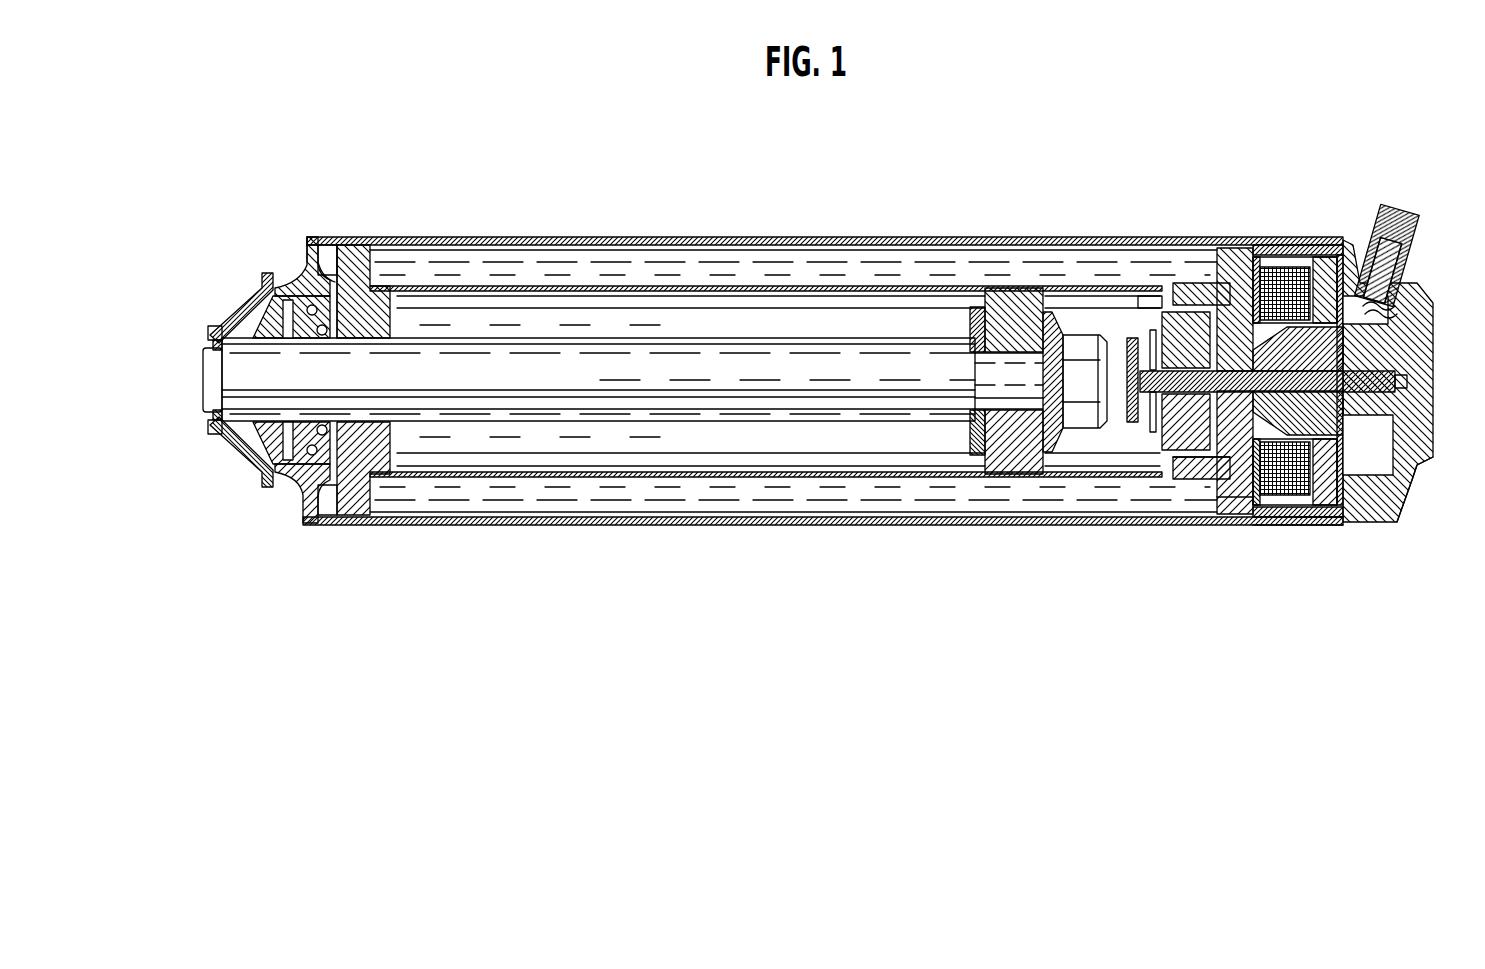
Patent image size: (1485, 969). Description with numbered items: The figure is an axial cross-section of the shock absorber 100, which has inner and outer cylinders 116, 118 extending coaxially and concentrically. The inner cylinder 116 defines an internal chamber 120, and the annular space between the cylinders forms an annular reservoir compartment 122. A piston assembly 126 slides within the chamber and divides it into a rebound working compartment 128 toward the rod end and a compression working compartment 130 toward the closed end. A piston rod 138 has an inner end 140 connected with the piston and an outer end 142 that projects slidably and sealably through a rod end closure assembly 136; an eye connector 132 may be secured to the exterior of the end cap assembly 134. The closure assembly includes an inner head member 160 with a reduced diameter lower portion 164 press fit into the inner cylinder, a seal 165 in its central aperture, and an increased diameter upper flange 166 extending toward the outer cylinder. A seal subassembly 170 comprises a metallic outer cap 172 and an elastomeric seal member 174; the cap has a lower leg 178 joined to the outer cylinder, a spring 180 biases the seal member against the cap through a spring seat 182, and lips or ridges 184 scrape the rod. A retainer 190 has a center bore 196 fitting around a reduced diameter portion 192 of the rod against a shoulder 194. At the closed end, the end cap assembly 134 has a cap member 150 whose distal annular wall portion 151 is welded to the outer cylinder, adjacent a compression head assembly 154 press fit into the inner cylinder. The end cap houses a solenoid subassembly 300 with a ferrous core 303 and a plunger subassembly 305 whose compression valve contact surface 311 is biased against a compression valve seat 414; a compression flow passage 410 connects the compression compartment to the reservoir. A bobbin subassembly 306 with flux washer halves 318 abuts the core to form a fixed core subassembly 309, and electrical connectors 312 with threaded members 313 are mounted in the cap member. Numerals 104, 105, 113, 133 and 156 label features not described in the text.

The shock absorber 100 is at (313, 196).
The bearing flange 104 is at (1173, 297).
The stator housing 105 is at (1190, 282).
The end plate 113 is at (1127, 427).
The inner cylinder 116 is at (533, 285).
The outer cylinder 118 is at (632, 262).
The internal chamber 120 is at (690, 310).
The annular reservoir compartment 122 is at (800, 262).
The piston assembly 126 is at (1013, 455).
The rebound working compartment 128 is at (905, 318).
The compression working compartment 130 is at (1073, 313).
The eye connector 132 is at (1148, 300).
The bearing 133 is at (1177, 452).
The end cap assembly 134 is at (1403, 512).
The rod end closure assembly 136 is at (298, 268).
The piston rod 138 is at (603, 420).
The inner end 140 is at (733, 400).
The outer end 142 is at (203, 398).
The cap member 150 is at (1427, 317).
The distal annular wall portion 151 is at (1297, 243).
The compression head assembly 154 is at (1192, 483).
The end cavity 156 is at (1377, 473).
The inner head member 160 is at (392, 318).
The reduced diameter lower portion 164 is at (427, 288).
The seal 165 is at (400, 432).
The increased diameter upper flange 166 is at (360, 236).
The seal subassembly 170 is at (255, 318).
The outer cap 172 is at (262, 300).
The seal member 174 is at (303, 283).
The lower leg 178 is at (323, 234).
The spring 180 is at (375, 450).
The spring seat 182 is at (303, 492).
The lips or ridges 184 is at (305, 470).
The retainer 190 is at (258, 468).
The reduced diameter portion 192 is at (200, 363).
The shoulder 194 is at (240, 445).
The center bore 196 is at (213, 335).
The solenoid subassembly 300 is at (1213, 232).
The ferrous core 303 is at (1258, 230).
The plunger subassembly 305 is at (1350, 403).
The bobbin subassembly 306 is at (1278, 240).
The fixed core subassembly 309 is at (1300, 545).
The compression valve contact surface 311 is at (1288, 530).
The electrical connectors 312 is at (1395, 208).
The externally threaded member 313 is at (1412, 222).
The flux washer halves 318 is at (1330, 237).
The compression flow passage 410 is at (1142, 345).
The compression valve seat 414 is at (1262, 498).